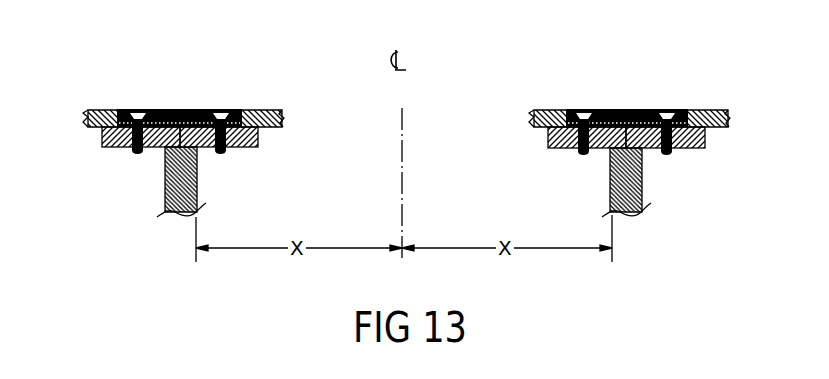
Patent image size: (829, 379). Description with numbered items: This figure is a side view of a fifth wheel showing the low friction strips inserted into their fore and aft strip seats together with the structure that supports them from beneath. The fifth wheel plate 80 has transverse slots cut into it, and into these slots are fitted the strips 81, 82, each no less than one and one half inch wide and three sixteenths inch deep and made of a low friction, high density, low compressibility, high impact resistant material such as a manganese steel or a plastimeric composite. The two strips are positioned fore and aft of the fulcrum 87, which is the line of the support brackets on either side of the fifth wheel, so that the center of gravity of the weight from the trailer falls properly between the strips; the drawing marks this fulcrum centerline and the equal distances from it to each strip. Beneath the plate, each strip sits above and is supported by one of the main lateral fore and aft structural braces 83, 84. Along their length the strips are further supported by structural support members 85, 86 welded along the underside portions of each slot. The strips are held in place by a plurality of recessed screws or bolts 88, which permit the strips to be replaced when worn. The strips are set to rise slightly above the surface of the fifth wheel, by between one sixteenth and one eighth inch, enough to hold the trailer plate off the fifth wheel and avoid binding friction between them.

The fifth wheel plate 80 is at (108, 110).
The strip 81 is at (635, 109).
The strip 82 is at (186, 109).
The main lateral structural brace 83 is at (642, 195).
The main lateral structural brace 84 is at (165, 193).
The structural support member 85 is at (258, 148).
The structural support member 86 is at (102, 137).
The fulcrum 87 is at (403, 205).
The recessed screws or bolts 88 is at (137, 154).